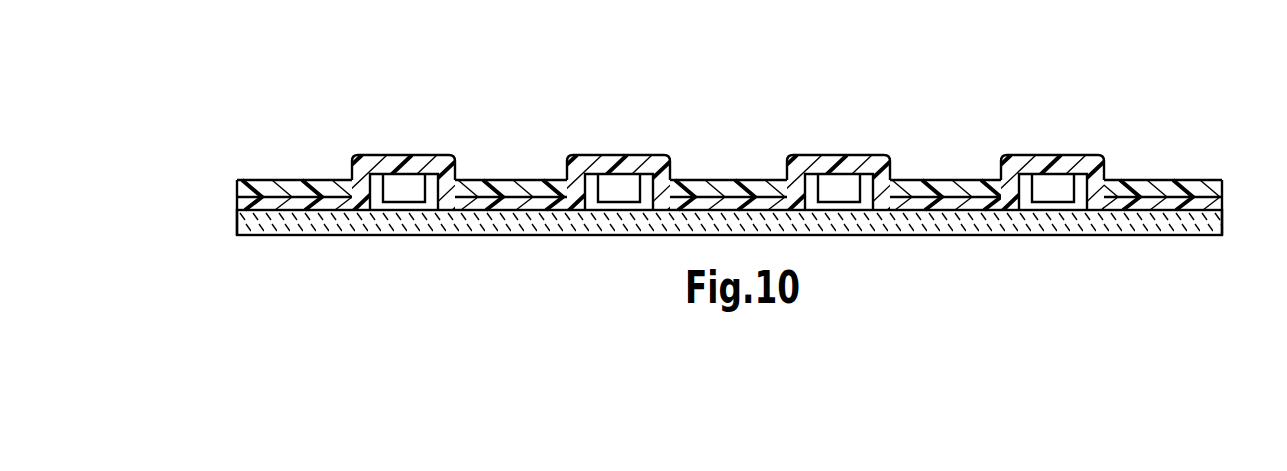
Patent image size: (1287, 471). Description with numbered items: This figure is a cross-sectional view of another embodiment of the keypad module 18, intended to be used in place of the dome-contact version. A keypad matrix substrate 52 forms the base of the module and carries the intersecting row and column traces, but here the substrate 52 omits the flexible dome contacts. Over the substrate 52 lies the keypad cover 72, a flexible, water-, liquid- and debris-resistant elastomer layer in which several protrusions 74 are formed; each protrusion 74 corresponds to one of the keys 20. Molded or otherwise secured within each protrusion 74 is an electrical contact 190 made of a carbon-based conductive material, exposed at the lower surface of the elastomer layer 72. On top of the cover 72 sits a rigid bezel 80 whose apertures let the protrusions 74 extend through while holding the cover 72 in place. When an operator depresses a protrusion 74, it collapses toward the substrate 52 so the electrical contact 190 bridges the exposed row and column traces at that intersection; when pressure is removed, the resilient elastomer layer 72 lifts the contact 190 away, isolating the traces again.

The keypad module 18 is at (200, 159).
The keys 20 is at (621, 112).
The keypad matrix substrate 52 is at (1138, 213).
The keypad cover 72 is at (1080, 172).
The protrusions 74 is at (1003, 165).
The bezel 80 is at (1158, 192).
The electrical contact 190 is at (837, 185).